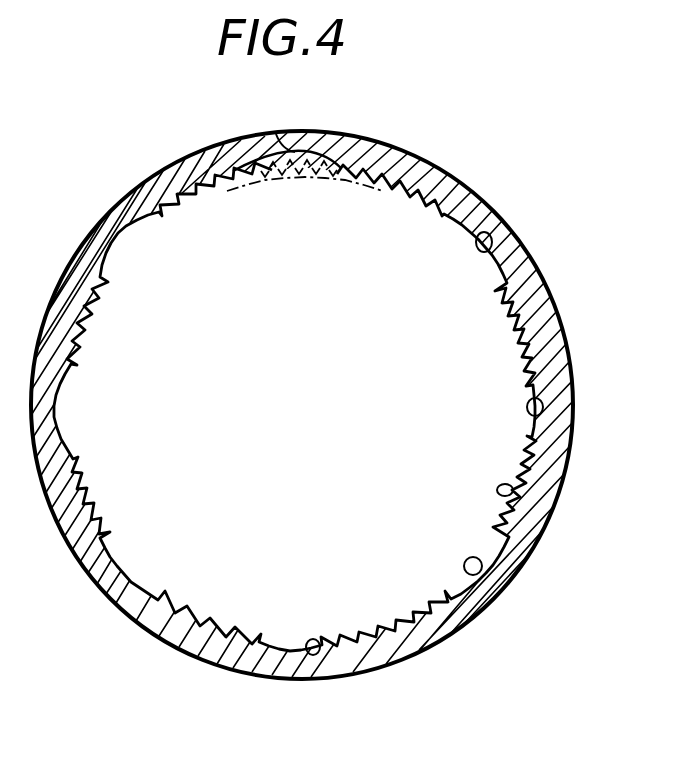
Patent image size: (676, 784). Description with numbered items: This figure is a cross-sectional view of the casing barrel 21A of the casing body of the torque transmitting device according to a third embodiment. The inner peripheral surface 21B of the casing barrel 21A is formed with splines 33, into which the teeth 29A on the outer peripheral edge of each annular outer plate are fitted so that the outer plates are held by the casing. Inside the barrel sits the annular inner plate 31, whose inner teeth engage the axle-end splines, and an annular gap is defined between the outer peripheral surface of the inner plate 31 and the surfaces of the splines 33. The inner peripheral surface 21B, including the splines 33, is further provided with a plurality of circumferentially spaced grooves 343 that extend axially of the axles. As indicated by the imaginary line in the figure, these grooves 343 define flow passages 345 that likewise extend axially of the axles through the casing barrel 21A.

The casing barrel 21A is at (483, 192).
The inner peripheral surface 21B is at (548, 357).
The teeth 29A is at (278, 130).
The inner plate 31 is at (235, 140).
The splines 33 is at (513, 491).
The grooves 343 is at (496, 236).
The flow passages 345 is at (356, 137).